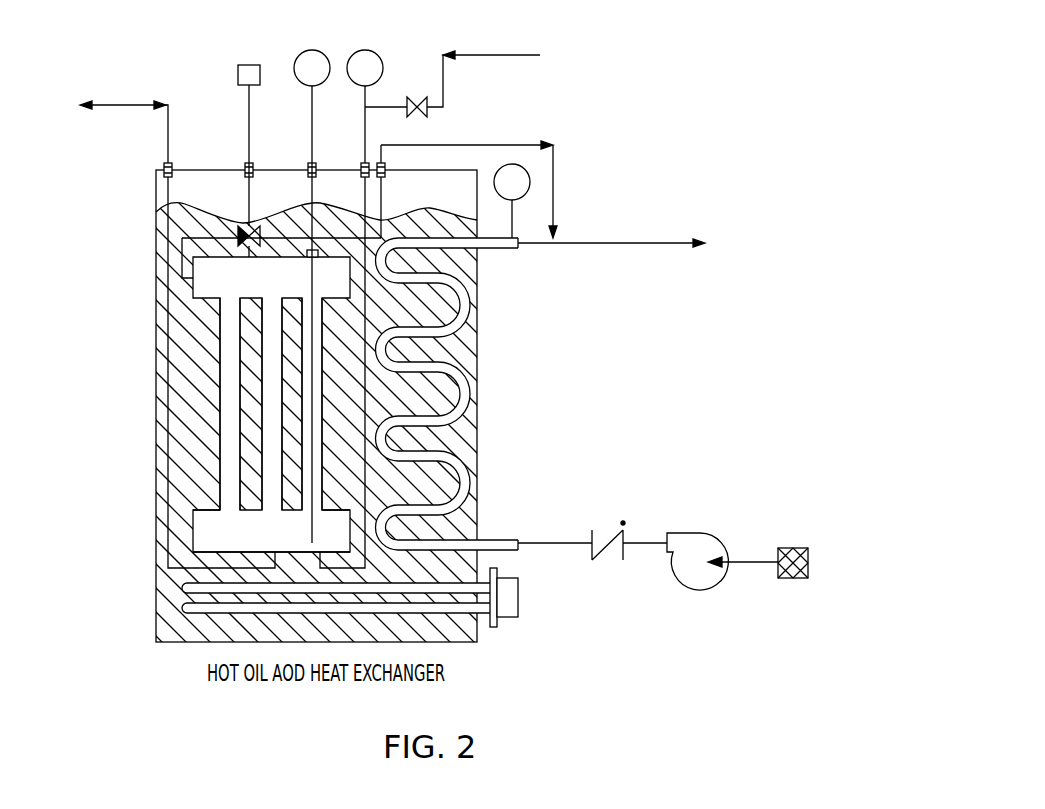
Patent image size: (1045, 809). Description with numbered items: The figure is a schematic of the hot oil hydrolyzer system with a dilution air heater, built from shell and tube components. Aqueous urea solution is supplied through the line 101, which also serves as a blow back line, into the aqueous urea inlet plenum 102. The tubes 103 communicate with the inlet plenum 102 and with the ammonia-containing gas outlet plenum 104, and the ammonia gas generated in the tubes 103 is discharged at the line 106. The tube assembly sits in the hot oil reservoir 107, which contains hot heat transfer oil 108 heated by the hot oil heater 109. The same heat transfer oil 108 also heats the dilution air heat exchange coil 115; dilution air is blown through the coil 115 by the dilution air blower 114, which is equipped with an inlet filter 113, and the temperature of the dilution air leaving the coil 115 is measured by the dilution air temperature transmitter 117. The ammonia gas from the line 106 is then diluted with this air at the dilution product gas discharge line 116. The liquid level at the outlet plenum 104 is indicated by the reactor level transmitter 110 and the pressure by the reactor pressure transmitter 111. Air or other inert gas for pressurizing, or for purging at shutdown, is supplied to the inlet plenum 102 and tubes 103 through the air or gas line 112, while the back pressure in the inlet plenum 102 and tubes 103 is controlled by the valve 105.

The line 101 is at (115, 103).
The aqueous urea inlet plenum 102 is at (192, 528).
The tubes 103 is at (218, 408).
The ammonia-containing gas outlet plenum 104 is at (192, 282).
The valve 105 is at (247, 186).
The line 106 is at (383, 200).
The hot oil reservoir 107 is at (478, 313).
The heat transfer oil 108 is at (407, 400).
The hot oil heater 109 is at (497, 622).
The reactor level transmitter 110 is at (312, 196).
The reactor pressure transmitter 111 is at (383, 68).
The air or gas line 112 is at (487, 55).
The inlet filter 113 is at (793, 548).
The dilution air blower 114 is at (700, 533).
The dilution air heat exchange coil 115 is at (468, 413).
The dilution product gas discharge line 116 is at (623, 240).
The dilution air temperature transmitter 117 is at (512, 222).